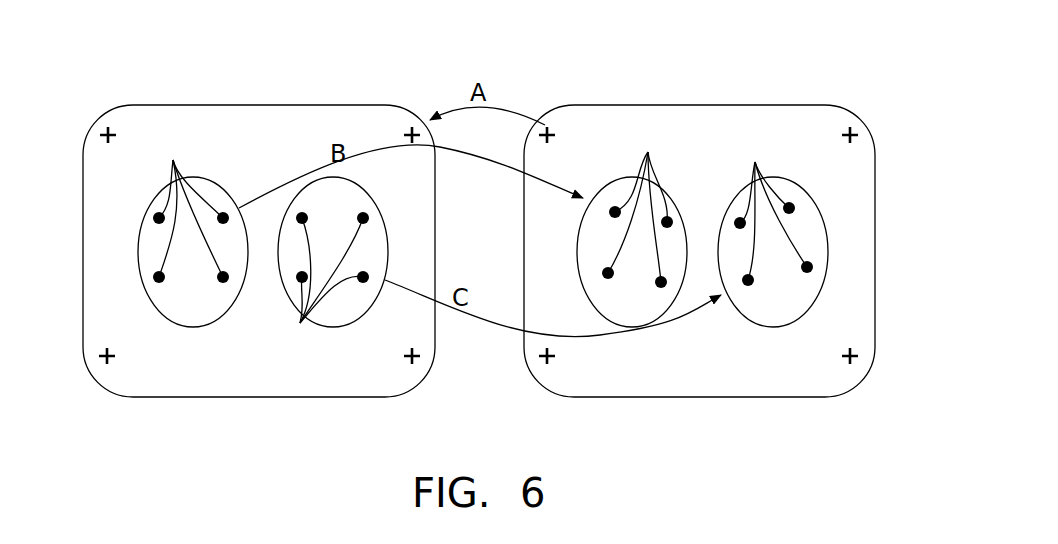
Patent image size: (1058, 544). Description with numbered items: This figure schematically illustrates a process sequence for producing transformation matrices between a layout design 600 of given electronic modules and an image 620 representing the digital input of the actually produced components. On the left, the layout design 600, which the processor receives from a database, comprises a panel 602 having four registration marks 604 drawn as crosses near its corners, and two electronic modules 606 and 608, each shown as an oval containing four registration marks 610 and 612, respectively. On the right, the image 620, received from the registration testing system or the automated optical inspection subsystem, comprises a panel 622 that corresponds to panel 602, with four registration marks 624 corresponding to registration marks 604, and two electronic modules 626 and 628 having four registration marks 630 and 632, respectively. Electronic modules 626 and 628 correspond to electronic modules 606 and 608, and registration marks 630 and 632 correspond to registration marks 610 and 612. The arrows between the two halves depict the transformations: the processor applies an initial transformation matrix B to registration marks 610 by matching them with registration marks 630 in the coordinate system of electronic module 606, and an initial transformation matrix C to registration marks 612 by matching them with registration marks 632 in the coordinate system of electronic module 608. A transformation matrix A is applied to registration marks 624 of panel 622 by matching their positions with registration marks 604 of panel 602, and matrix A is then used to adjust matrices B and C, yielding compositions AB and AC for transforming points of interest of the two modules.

The layout design 600 is at (112, 42).
The panel 602 is at (83, 288).
The registration marks 604 is at (104, 130).
The electronic module 606 is at (183, 327).
The electronic module 608 is at (352, 327).
The registration marks 610 is at (191, 208).
The registration marks 612 is at (314, 275).
The image 620 is at (877, 65).
The panel 622 is at (875, 328).
The registration marks 624 is at (549, 130).
The electronic module 626 is at (590, 300).
The electronic module 628 is at (772, 327).
The registration marks 630 is at (646, 208).
The registration marks 632 is at (773, 207).